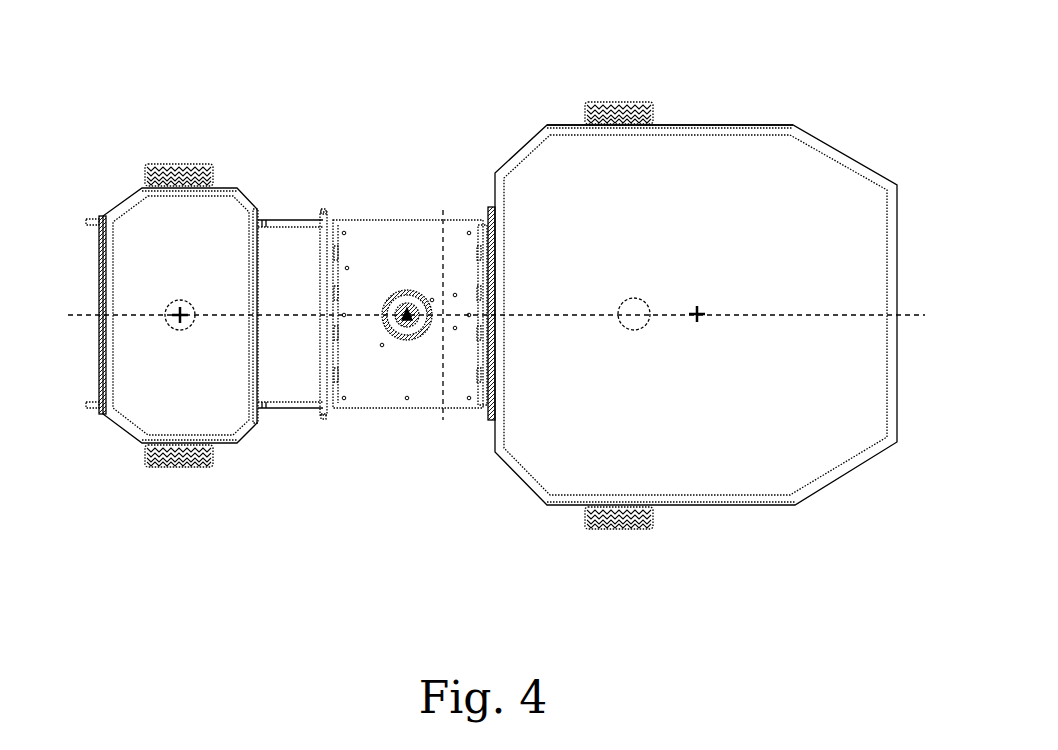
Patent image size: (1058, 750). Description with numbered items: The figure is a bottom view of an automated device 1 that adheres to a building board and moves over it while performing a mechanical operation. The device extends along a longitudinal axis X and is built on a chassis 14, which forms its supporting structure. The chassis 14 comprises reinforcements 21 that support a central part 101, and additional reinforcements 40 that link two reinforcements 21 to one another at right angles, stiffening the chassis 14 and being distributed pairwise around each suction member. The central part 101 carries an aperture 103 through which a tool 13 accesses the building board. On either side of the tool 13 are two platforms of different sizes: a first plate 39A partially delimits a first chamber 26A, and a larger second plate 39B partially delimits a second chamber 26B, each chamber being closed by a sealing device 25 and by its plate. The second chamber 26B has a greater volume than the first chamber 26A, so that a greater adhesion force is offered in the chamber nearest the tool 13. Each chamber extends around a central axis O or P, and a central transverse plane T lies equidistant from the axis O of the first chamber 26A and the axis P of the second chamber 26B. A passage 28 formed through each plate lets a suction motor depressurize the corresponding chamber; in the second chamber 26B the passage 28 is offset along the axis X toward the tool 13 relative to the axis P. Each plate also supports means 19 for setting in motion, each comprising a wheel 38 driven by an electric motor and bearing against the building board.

The automated device 1 is at (257, 518).
The tool 13 is at (407, 332).
The chassis 14 is at (313, 198).
The means for setting in motion 19 is at (628, 78).
The reinforcements 21 is at (278, 222).
The sealing device 25 is at (737, 127).
The first chamber 26A is at (225, 205).
The second chamber 26B is at (522, 172).
The passage 28 is at (180, 330).
The wheel 38 is at (178, 165).
The first plate 39A is at (218, 415).
The second plate 39B is at (830, 432).
The additional reinforcements 40 is at (103, 217).
The central part 101 is at (360, 256).
The aperture 103 is at (407, 281).
The central axis of the first chamber O is at (165, 312).
The central axis of the second chamber P is at (702, 315).
The longitudinal axis X is at (780, 312).
The central transverse plane T is at (495, 455).